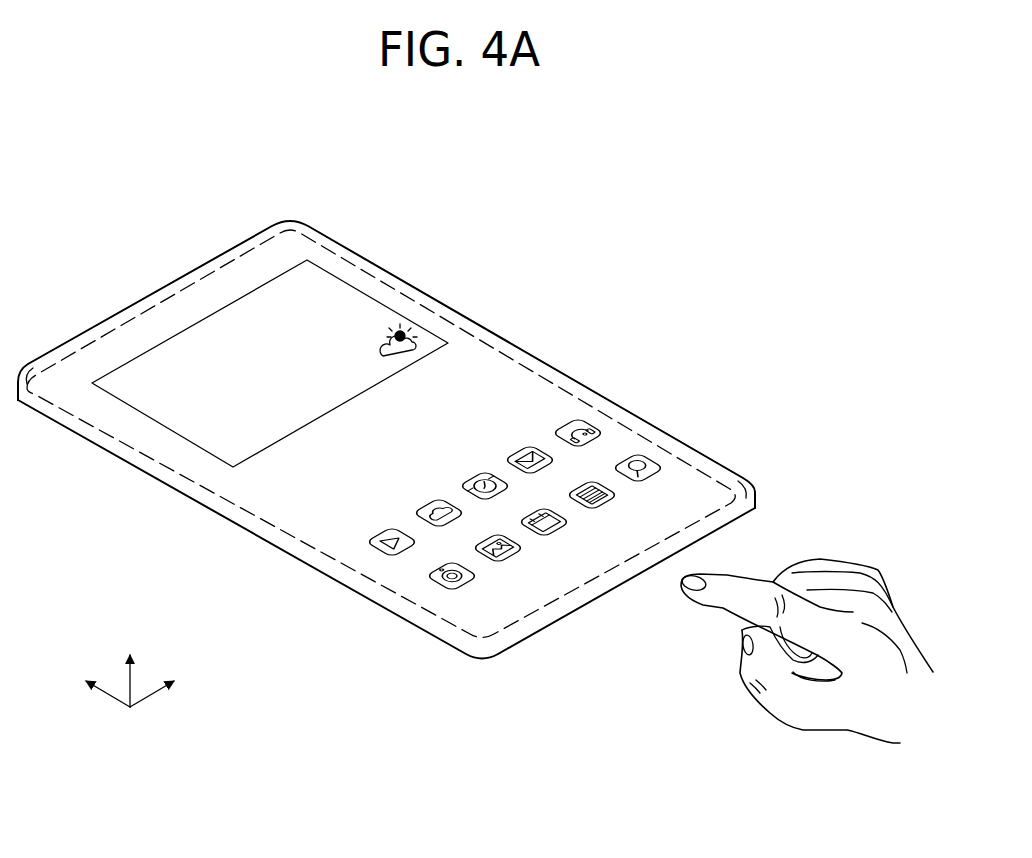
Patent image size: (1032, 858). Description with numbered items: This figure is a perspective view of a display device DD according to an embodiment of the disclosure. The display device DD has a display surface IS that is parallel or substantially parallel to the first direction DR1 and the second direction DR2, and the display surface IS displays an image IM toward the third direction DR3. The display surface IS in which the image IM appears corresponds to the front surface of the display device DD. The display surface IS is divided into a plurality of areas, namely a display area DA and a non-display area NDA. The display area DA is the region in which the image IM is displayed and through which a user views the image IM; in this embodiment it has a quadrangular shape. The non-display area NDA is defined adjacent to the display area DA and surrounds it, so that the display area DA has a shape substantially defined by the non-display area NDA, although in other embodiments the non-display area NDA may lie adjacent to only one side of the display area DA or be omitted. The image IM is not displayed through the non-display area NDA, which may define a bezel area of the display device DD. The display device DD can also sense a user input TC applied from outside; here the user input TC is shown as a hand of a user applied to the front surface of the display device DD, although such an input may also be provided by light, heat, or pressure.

The display device DD is at (386, 426).
The display surface IS is at (386, 416).
The display area DA is at (381, 416).
The non-display area NDA is at (494, 332).
The image IM is at (354, 287).
The user input TC is at (710, 625).
The first direction DR1 is at (82, 684).
The second direction DR2 is at (183, 684).
The third direction DR3 is at (133, 665).